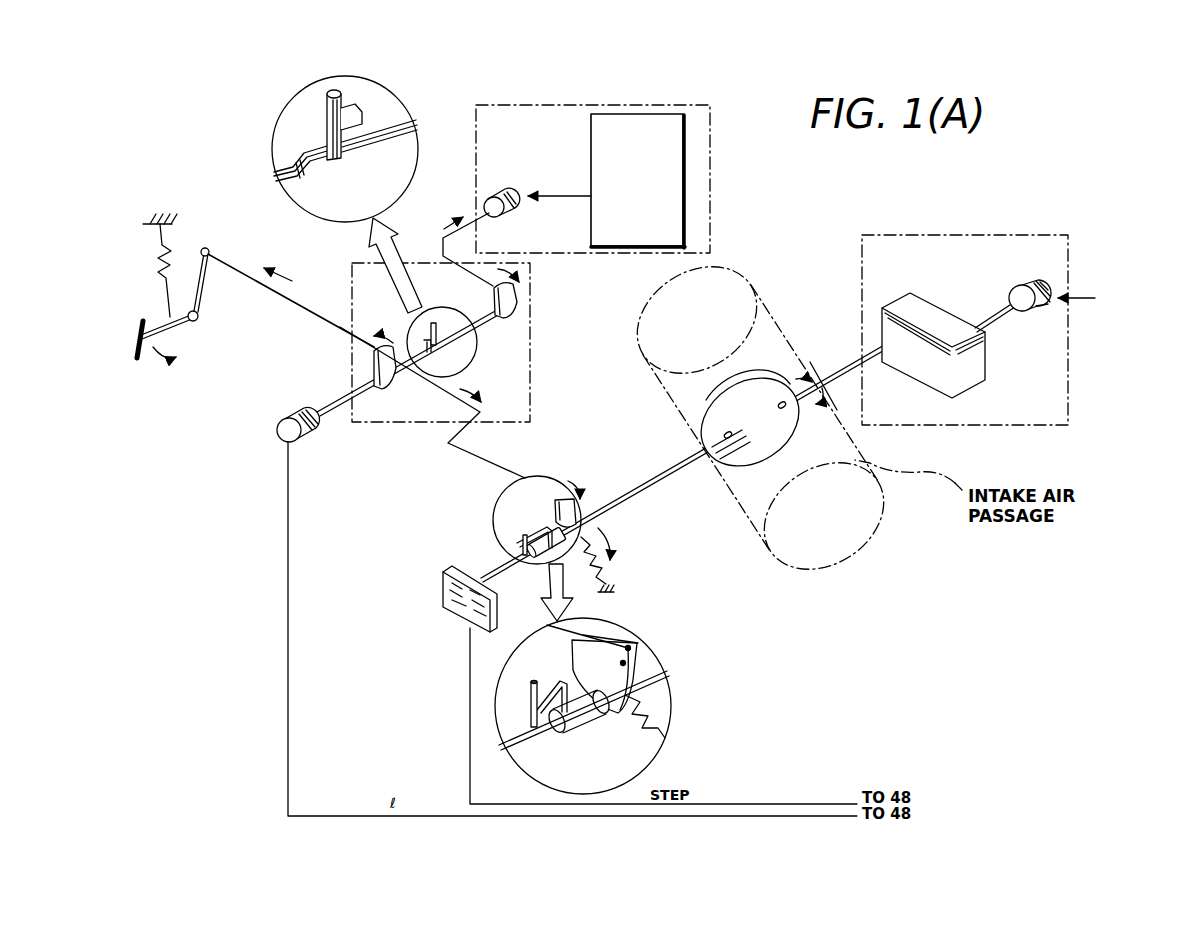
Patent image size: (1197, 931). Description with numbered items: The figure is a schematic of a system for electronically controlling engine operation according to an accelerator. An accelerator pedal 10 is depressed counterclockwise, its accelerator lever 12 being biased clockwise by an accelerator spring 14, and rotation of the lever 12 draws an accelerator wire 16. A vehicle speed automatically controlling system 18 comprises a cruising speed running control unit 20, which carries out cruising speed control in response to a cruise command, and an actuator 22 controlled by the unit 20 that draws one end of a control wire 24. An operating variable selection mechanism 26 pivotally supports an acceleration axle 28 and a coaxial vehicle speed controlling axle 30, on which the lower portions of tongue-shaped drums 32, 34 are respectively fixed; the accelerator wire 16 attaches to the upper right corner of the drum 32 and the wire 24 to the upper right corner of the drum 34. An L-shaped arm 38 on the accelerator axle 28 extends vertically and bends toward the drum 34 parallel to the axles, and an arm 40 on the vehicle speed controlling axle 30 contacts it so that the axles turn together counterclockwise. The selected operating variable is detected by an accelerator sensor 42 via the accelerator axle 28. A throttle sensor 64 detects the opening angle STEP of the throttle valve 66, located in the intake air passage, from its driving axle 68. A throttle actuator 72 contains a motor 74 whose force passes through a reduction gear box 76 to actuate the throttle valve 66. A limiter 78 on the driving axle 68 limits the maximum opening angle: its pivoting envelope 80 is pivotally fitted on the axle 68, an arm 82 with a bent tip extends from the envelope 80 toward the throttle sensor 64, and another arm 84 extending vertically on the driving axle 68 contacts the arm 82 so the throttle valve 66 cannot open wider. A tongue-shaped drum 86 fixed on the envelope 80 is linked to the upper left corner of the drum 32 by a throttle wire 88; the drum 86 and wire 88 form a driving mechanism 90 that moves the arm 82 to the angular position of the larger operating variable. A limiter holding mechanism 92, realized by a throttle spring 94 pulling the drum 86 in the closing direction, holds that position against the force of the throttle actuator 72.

The accelerator pedal 10 is at (127, 330).
The accelerator lever 12 is at (184, 325).
The accelerator spring 14 is at (157, 274).
The accelerator wire 16 is at (281, 296).
The vehicle speed automatically controlling system 18 is at (716, 167).
The cruising speed running control unit 20 is at (688, 192).
The actuator 22 is at (512, 190).
The control wire 24 is at (485, 216).
The operating variable selection mechanism 26 is at (538, 302).
The accelerator axle 28 is at (332, 414).
The vehicle speed controlling axle 30 is at (490, 322).
The drum 32 is at (388, 391).
The drum 34 is at (515, 306).
The L-shaped arm 38 is at (303, 136).
The arm 40 is at (340, 93).
The accelerator sensor 42 is at (277, 430).
The throttle sensor 64 is at (441, 596).
The throttle valve 66 is at (773, 432).
The driving axle 68 is at (667, 467).
The throttle actuator 72 is at (1006, 230).
The motor 74 is at (1042, 290).
The reduction gear box 76 is at (932, 312).
The limiter 78 is at (503, 520).
The pivoting envelope 80 is at (555, 540).
The arm 82 is at (522, 536).
The arm 84 is at (517, 547).
The drum 86 is at (554, 498).
The throttle wire 88 is at (486, 461).
The driving mechanism 90 is at (509, 460).
The limiter holding mechanism 92 is at (618, 545).
The throttle spring 94 is at (600, 568).